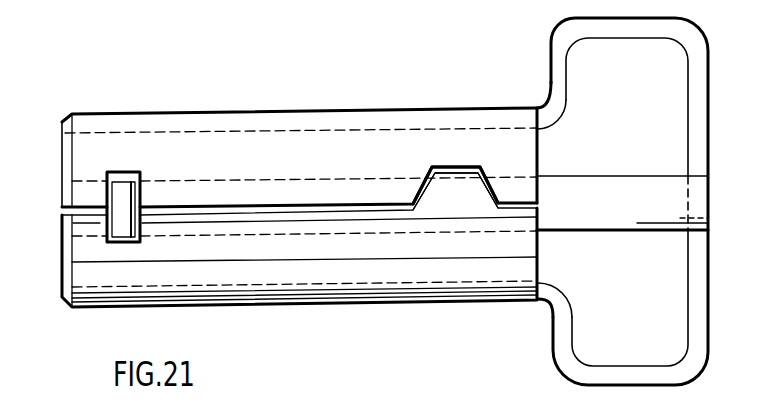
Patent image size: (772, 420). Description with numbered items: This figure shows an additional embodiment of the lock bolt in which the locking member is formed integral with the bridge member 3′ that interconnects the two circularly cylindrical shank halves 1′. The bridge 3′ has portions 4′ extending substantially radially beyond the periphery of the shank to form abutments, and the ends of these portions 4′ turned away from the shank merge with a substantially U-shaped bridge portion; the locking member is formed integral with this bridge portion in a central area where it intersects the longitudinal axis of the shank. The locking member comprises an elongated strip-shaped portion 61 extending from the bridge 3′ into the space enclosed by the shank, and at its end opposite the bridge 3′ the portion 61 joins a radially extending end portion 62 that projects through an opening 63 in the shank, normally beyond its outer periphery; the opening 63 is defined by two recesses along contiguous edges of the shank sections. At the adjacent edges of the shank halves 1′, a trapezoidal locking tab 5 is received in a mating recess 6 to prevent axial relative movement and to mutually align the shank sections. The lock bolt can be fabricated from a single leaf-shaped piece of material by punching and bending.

The shank half 1′ is at (365, 122).
The bridge member 3′ is at (698, 127).
The portions of the bridge 4′ is at (547, 83).
The locking tab 5 is at (482, 185).
The recess 6 is at (455, 167).
The elongated strip-shaped portion 61 is at (625, 188).
The radially extending end portion 62 is at (122, 232).
The opening 63 is at (107, 193).